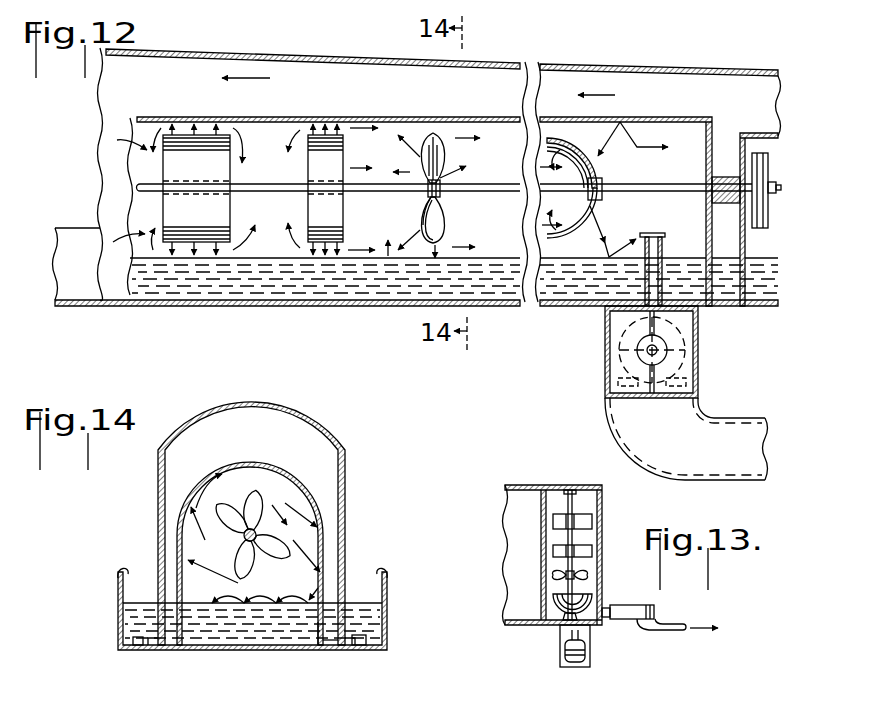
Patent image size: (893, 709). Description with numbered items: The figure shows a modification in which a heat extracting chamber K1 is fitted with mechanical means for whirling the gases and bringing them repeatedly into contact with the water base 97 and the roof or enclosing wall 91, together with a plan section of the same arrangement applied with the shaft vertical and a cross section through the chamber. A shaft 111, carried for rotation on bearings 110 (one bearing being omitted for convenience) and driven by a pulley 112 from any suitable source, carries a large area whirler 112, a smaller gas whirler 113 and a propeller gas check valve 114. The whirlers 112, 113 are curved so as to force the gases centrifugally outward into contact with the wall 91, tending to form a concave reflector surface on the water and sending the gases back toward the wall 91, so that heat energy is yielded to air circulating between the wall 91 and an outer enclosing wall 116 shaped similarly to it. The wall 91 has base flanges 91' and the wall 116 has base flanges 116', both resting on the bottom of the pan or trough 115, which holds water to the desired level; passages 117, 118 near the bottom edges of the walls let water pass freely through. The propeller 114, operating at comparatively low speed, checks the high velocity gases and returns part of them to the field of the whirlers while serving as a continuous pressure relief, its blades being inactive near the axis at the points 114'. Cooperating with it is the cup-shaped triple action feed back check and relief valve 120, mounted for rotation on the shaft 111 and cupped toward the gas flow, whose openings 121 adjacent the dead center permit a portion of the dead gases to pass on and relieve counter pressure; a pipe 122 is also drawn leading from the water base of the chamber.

In FIG. 12, the enclosing wall 91 is at (453, 184).
In FIG. 14, the enclosing wall 91 is at (250, 540).
In FIG. 13, the enclosing wall 91 is at (553, 540).
In FIG. 14, the base flanges 91' is at (282, 657).
In FIG. 12, the water base 97 is at (310, 302).
In FIG. 12, the bearings 110 is at (717, 177).
In FIG. 12, the shaft 111 is at (644, 192).
In FIG. 12, the large area whirler 112 is at (220, 155).
In FIG. 13, the large area whirler 112 is at (591, 521).
In FIG. 12, the smaller gas whirler 113 is at (340, 153).
In FIG. 14, the smaller gas whirler 113 is at (262, 495).
In FIG. 13, the smaller gas whirler 113 is at (591, 550).
In FIG. 12, the propeller gas check valve 114 is at (452, 188).
In FIG. 14, the propeller gas check valve 114 is at (258, 548).
In FIG. 13, the propeller gas check valve 114 is at (591, 568).
In FIG. 12, the inactive points of propeller blades 114' is at (404, 212).
In FIG. 14, the pan or trough 115 is at (383, 597).
In FIG. 12, the enclosing wall 116 is at (417, 174).
In FIG. 14, the enclosing wall 116 is at (253, 515).
In FIG. 14, the base flanges 116' is at (249, 625).
In FIG. 14, the passage 117 is at (320, 638).
In FIG. 14, the passage 118 is at (333, 640).
In FIG. 12, the triple action feed back check and relief valve 120 is at (576, 158).
In FIG. 13, the triple action feed back check and relief valve 120 is at (590, 601).
In FIG. 12, the openings (outlet ports) 121 is at (592, 169).
In FIG. 12, the drain pipe 122 is at (661, 234).
In FIG. 12, the chamber K1 is at (644, 141).
In FIG. 14, the chamber K1 is at (213, 545).